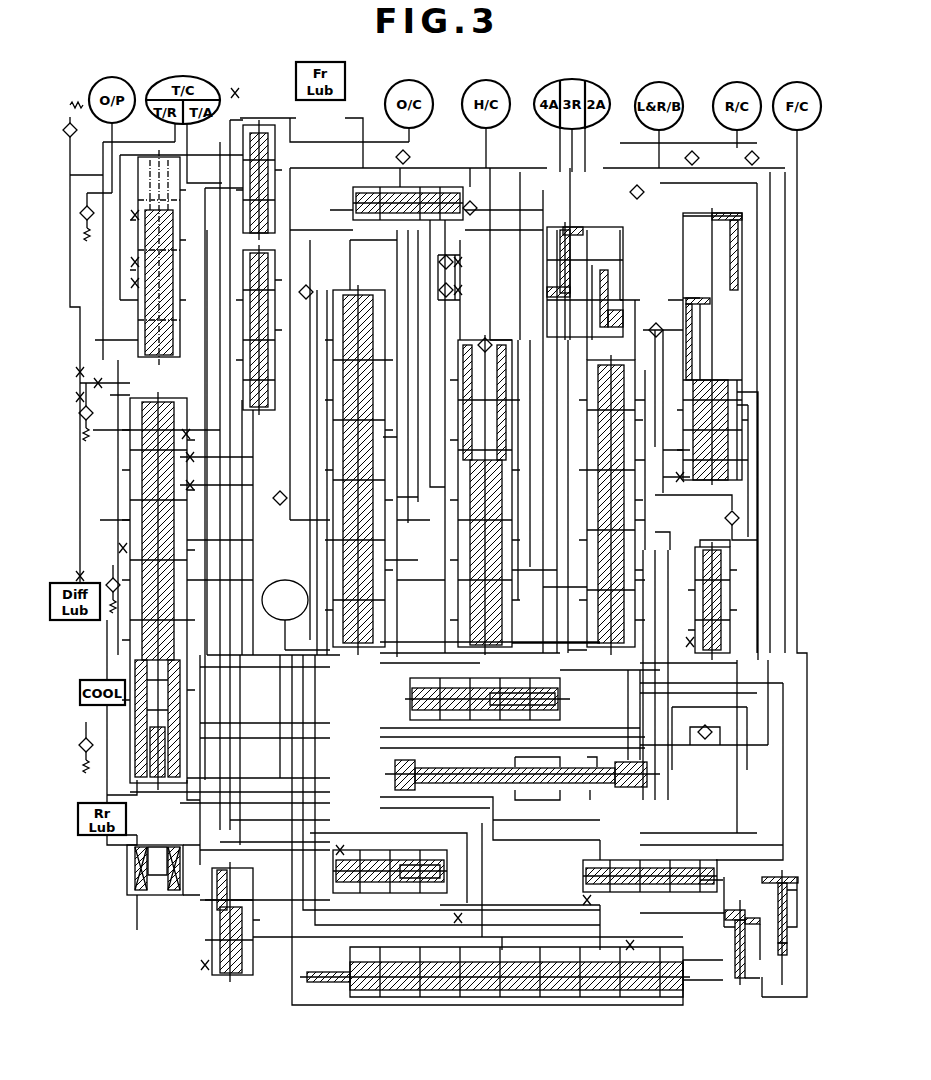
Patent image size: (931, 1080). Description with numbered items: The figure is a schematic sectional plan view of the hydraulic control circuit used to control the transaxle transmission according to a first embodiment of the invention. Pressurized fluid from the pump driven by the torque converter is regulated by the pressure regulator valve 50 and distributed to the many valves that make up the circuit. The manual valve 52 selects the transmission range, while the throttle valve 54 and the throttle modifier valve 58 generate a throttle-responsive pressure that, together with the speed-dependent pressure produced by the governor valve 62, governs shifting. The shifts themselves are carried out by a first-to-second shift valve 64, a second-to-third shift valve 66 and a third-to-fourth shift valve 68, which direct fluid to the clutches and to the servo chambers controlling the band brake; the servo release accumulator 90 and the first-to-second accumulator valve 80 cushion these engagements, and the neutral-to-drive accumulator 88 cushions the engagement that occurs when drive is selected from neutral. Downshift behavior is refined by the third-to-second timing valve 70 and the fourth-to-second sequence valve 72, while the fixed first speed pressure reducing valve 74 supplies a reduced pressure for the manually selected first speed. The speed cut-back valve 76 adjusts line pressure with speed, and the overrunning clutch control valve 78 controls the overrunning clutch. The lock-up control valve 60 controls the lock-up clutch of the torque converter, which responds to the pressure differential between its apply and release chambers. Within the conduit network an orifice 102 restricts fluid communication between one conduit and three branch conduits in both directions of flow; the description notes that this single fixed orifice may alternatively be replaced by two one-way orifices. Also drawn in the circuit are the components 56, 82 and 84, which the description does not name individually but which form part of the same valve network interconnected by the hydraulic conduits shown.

The pressure regulator valve 50 is at (178, 400).
The manual valve 52 is at (608, 795).
The throttle valve 54 is at (578, 1000).
The shift valve 56 is at (415, 862).
The throttle modifier valve 58 is at (228, 980).
The lock-up control valve 60 is at (178, 305).
The governor valve 62 is at (285, 580).
The 1-2 shift valve 64 is at (600, 380).
The 2-3 shift valve 66 is at (468, 348).
The 3-4 shift valve 68 is at (358, 650).
The 3-2 timing valve 70 is at (380, 187).
The 4-2 sequence valve 72 is at (405, 702).
The fixed first speed pressure reducing valve 74 is at (700, 545).
The speed cut-back valve 76 is at (275, 140).
The overrunning clutch control valve 78 is at (255, 415).
The 1-2 accumulator valve 80 is at (722, 213).
The valve 82 is at (578, 888).
The solenoid valve 84 is at (150, 897).
The N-D accumulator 88 is at (732, 965).
The servo release accumulator 90 is at (572, 225).
The orifice 102 is at (458, 285).